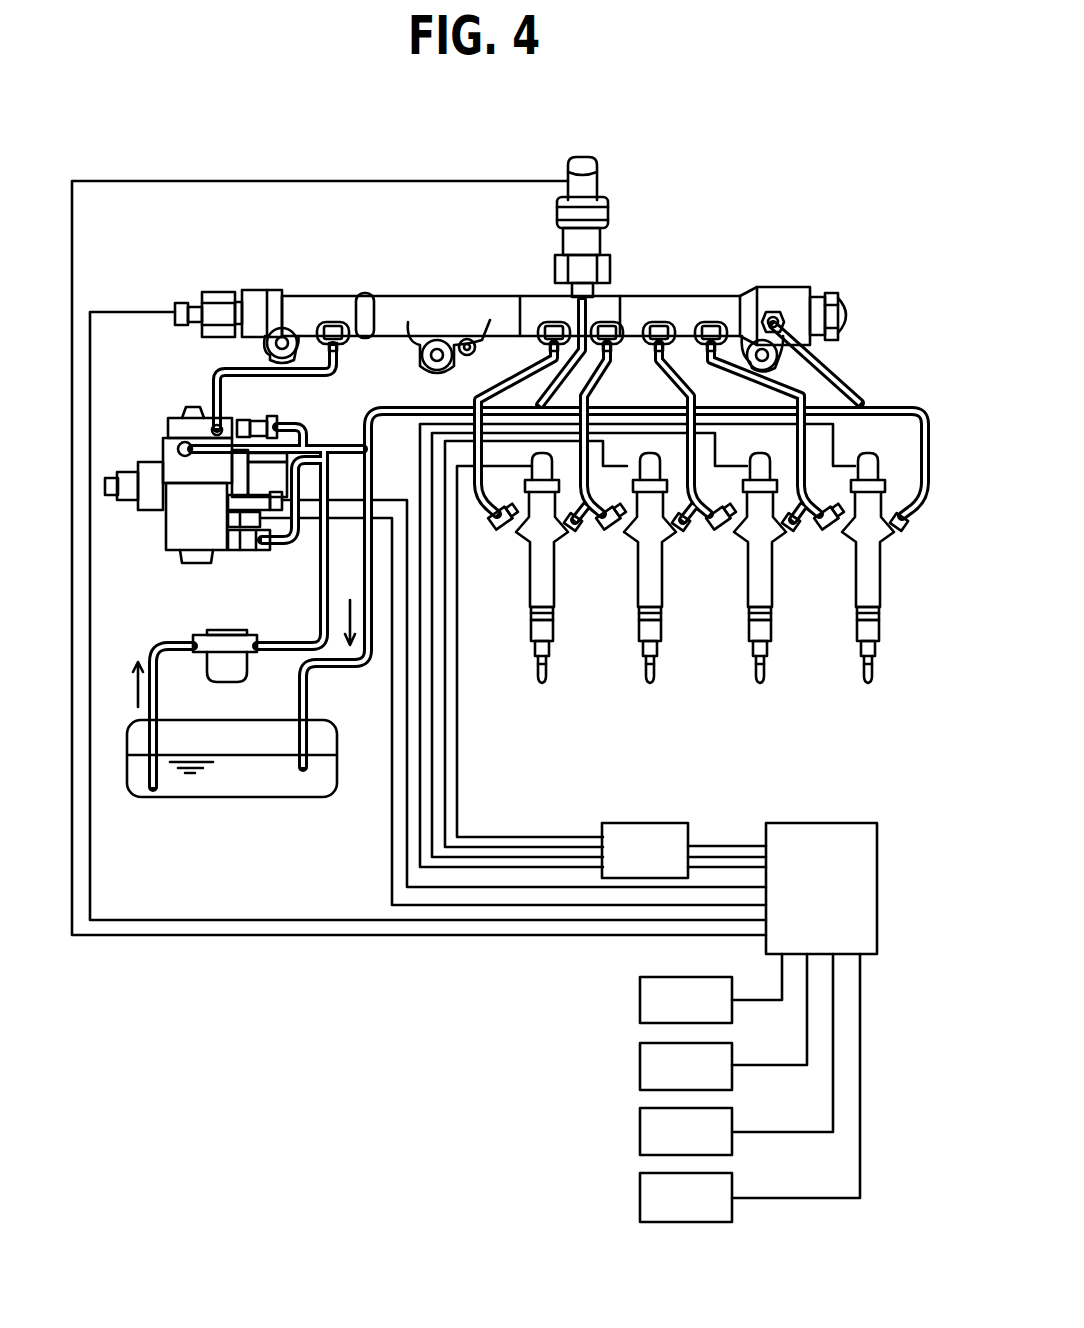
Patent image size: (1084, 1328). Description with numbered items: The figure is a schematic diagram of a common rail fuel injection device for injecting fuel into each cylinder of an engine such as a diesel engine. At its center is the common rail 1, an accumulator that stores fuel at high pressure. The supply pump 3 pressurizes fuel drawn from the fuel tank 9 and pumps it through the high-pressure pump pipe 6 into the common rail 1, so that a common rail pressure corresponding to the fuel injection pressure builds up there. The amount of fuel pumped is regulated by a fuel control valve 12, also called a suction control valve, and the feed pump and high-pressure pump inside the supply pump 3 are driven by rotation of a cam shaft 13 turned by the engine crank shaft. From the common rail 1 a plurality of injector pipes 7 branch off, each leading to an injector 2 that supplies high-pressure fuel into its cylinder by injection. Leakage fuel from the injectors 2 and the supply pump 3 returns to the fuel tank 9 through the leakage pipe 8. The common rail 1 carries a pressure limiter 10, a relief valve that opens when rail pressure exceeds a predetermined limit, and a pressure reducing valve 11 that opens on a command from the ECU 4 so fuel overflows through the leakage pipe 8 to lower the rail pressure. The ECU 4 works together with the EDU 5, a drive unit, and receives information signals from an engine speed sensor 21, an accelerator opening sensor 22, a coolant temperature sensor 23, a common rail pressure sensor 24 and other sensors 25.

The common rail 1 is at (449, 298).
The injector 2 is at (554, 587).
The supply pump 3 is at (150, 433).
The ECU 4 is at (840, 823).
The EDU 5 is at (657, 823).
The high-pressure pump pipe 6 is at (227, 370).
The injector pipes 7 is at (778, 387).
The leakage pipe 8 is at (372, 470).
The fuel tank 9 is at (193, 720).
The pressure limiter 10 is at (832, 294).
The pressure reducing valve 11 is at (608, 210).
The fuel control valve 12 is at (292, 548).
The cam shaft 13 is at (127, 495).
The engine speed sensor 21 is at (640, 1000).
The accelerator opening sensor 22 is at (640, 1066).
The coolant temperature sensor 23 is at (640, 1132).
The common rail pressure sensor 24 is at (182, 302).
The other sensors 25 is at (640, 1198).